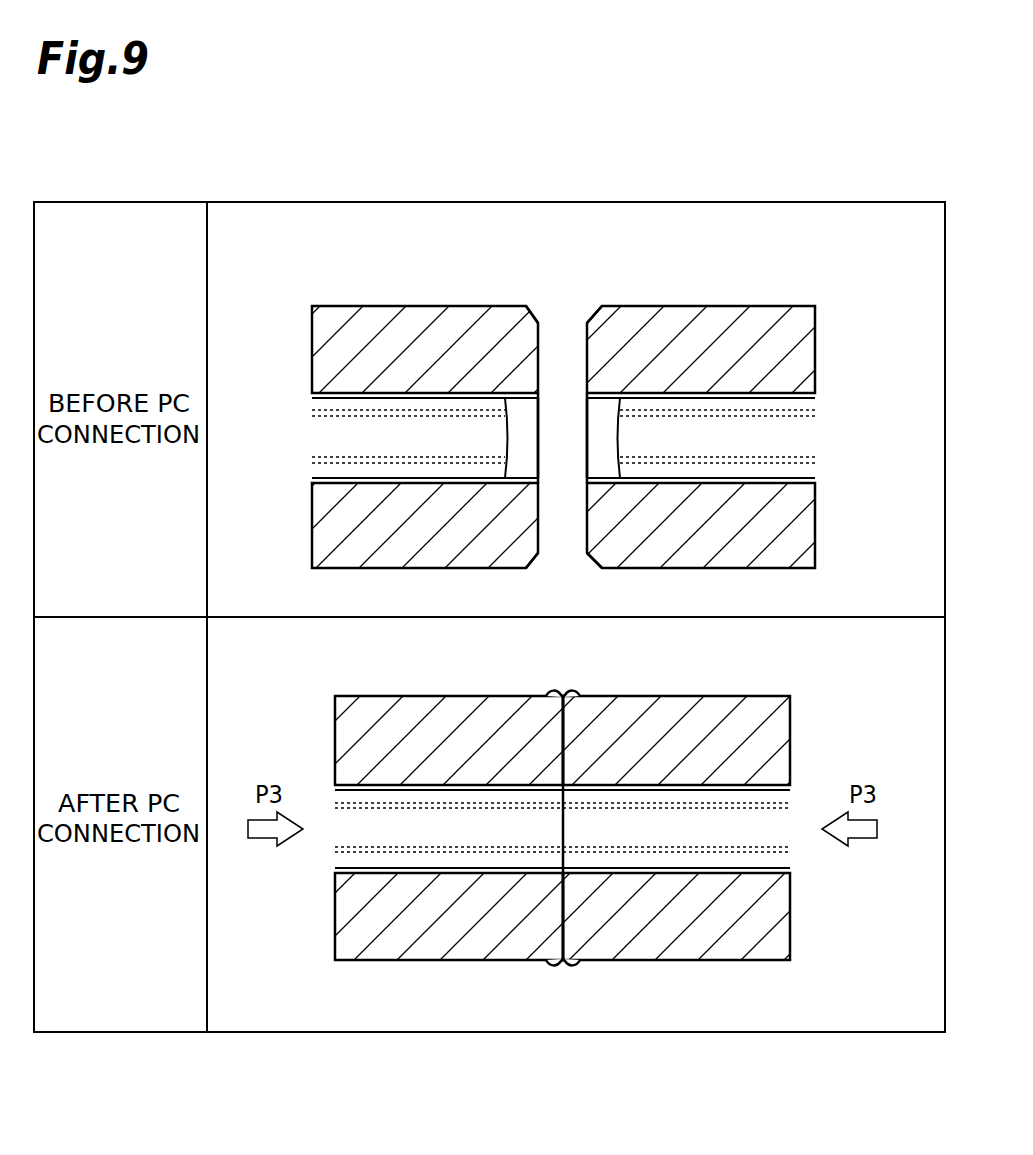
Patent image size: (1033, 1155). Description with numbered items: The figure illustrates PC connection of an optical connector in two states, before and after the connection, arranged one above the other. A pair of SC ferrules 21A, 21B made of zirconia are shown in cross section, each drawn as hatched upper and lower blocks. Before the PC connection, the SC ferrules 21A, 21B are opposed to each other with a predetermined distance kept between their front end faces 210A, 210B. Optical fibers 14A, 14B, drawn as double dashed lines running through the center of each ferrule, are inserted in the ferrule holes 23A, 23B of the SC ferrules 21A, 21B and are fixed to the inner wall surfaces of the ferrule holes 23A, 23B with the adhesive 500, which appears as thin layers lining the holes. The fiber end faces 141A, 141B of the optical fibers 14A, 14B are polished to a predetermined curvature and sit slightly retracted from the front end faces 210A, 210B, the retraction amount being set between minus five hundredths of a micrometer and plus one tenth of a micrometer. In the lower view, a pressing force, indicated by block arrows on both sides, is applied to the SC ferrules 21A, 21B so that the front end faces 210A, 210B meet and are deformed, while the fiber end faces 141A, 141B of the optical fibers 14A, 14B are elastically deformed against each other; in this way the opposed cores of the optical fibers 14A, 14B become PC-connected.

The SC ferrule 21B is at (412, 313).
The SC ferrule 21A is at (764, 316).
The front end face 210B is at (550, 313).
The front end face 210A is at (590, 317).
The adhesive 500 is at (368, 390).
The optical fiber 14B is at (334, 439).
The optical fiber 14A is at (802, 440).
The fiber end face 141B is at (507, 435).
The fiber end face 141A is at (618, 435).
The ferrule hole 23B is at (530, 453).
The ferrule hole 23A is at (607, 449).